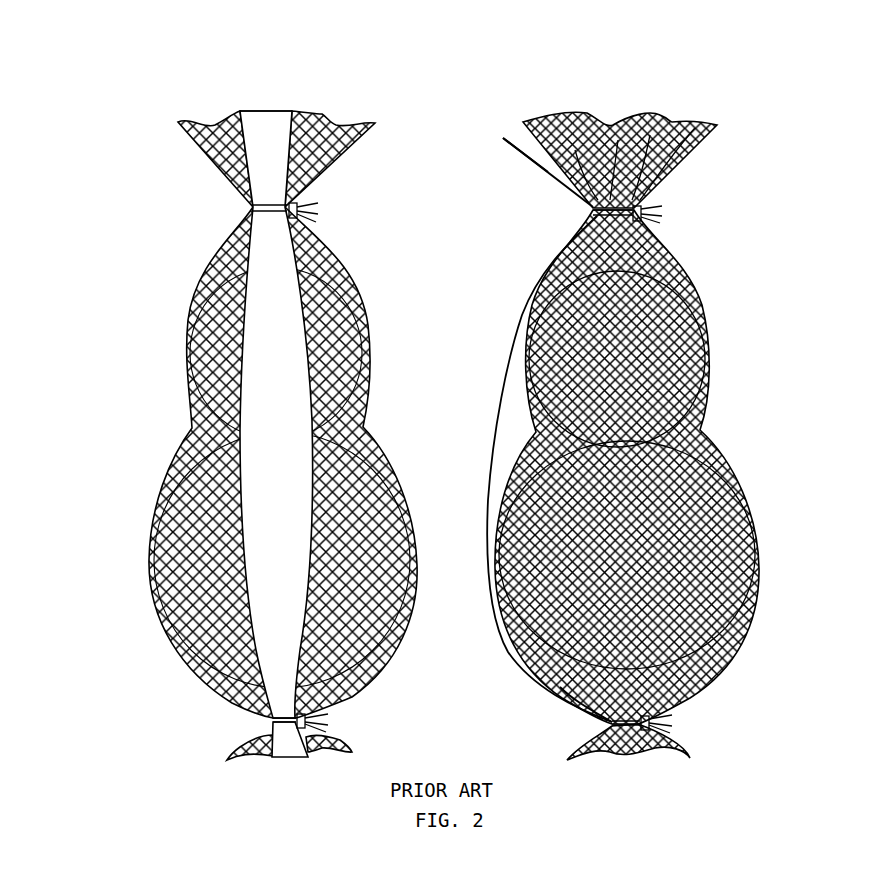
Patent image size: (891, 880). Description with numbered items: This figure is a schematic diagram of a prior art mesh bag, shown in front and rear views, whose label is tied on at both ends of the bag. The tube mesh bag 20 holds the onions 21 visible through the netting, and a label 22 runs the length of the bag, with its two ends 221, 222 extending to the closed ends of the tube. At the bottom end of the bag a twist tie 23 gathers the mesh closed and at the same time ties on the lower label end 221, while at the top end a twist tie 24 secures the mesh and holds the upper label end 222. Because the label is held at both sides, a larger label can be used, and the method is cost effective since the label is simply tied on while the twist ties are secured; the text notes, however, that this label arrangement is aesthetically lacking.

The mesh bag 20 is at (325, 135).
The onions 21 is at (366, 338).
The strap 22 is at (190, 302).
The twist tie 23 is at (298, 717).
The twist tie 24 is at (295, 203).
The label end 221 is at (283, 755).
The label end 222 is at (255, 117).